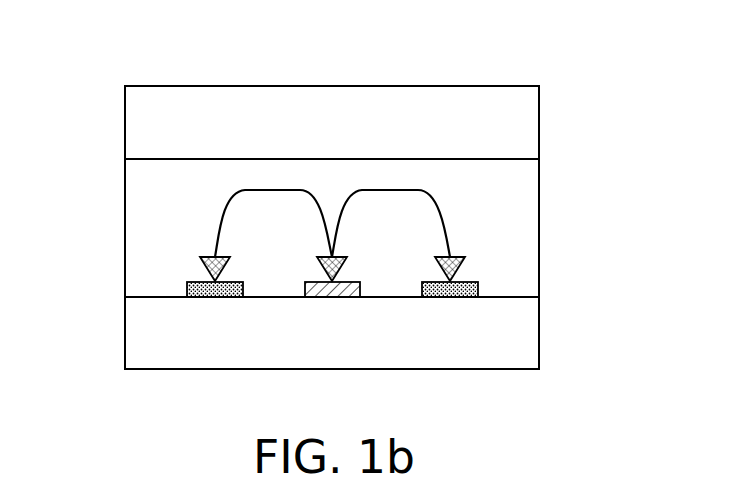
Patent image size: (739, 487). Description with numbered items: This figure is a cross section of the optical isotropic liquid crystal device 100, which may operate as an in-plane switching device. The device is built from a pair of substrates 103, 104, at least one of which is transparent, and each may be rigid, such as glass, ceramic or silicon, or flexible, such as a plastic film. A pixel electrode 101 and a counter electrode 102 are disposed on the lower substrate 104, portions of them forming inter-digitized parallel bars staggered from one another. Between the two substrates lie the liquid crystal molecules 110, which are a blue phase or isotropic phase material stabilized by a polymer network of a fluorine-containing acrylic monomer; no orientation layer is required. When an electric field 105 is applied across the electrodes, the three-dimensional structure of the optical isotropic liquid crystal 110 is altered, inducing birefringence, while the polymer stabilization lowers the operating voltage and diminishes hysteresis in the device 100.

The optical isotropic liquid crystal device 100 is at (607, 53).
The pixel electrode 101 is at (215, 298).
The counter electrode 102 is at (330, 298).
The substrate 103 is at (357, 138).
The substrate 104 is at (510, 347).
The electric field 105 is at (217, 229).
The liquid crystal molecules 110 is at (540, 200).